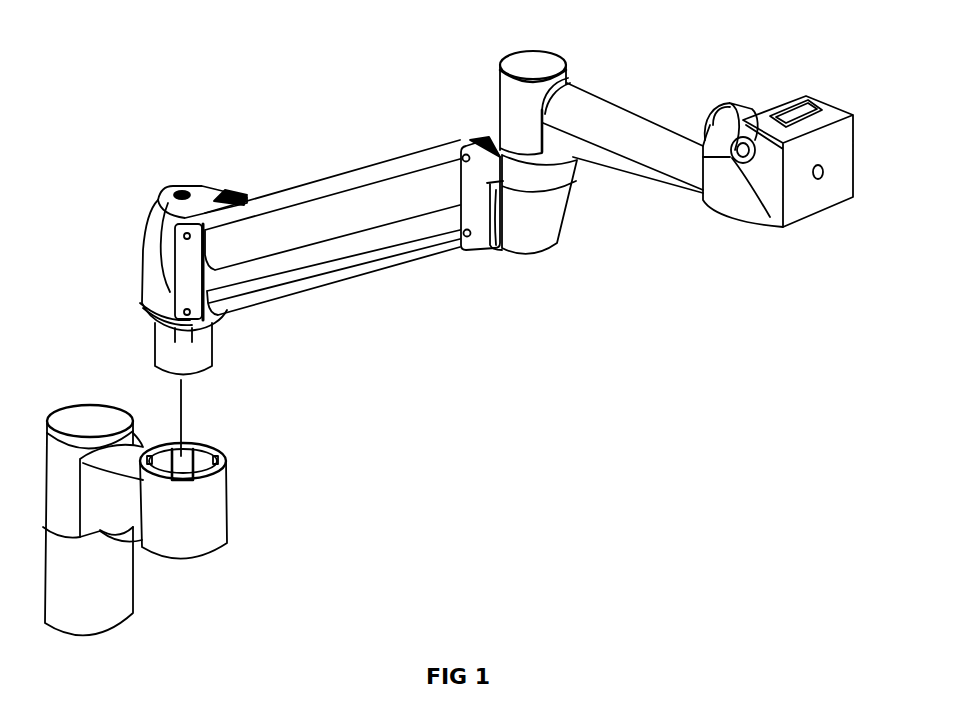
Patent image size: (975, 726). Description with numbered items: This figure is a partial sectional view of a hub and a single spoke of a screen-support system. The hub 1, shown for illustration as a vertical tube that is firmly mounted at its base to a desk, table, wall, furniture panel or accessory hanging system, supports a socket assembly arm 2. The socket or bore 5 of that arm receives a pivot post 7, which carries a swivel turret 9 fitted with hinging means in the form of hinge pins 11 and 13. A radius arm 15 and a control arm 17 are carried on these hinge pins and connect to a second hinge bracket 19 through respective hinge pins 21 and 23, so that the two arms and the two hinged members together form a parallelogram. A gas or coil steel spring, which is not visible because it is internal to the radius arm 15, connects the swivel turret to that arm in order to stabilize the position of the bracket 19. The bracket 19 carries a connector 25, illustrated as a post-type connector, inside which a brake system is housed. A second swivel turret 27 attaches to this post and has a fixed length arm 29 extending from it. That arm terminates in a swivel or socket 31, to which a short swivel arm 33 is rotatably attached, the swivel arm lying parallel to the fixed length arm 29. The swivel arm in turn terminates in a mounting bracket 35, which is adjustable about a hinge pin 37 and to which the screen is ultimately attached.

The hub 1 is at (75, 600).
The socket assembly arm 2 is at (224, 513).
The socket or bore 5 is at (210, 452).
The pivot post 7 is at (205, 347).
The swivel turret 9 is at (150, 242).
The hinge pin 11 is at (160, 213).
The hinge pin 13 is at (180, 307).
The radius arm 15 is at (308, 197).
The control arm 17 is at (363, 263).
The second hinge bracket 19 is at (343, 176).
The hinge pin 21 is at (467, 193).
The hinge pin 23 is at (461, 250).
The connector 25 is at (550, 222).
The swivel turret 27 is at (538, 60).
The fixed length arm 29 is at (635, 122).
The swivel or socket 31 is at (732, 193).
The short swivel arm 33 is at (733, 115).
The mounting bracket 35 is at (820, 193).
The hinge pin 37 is at (733, 157).